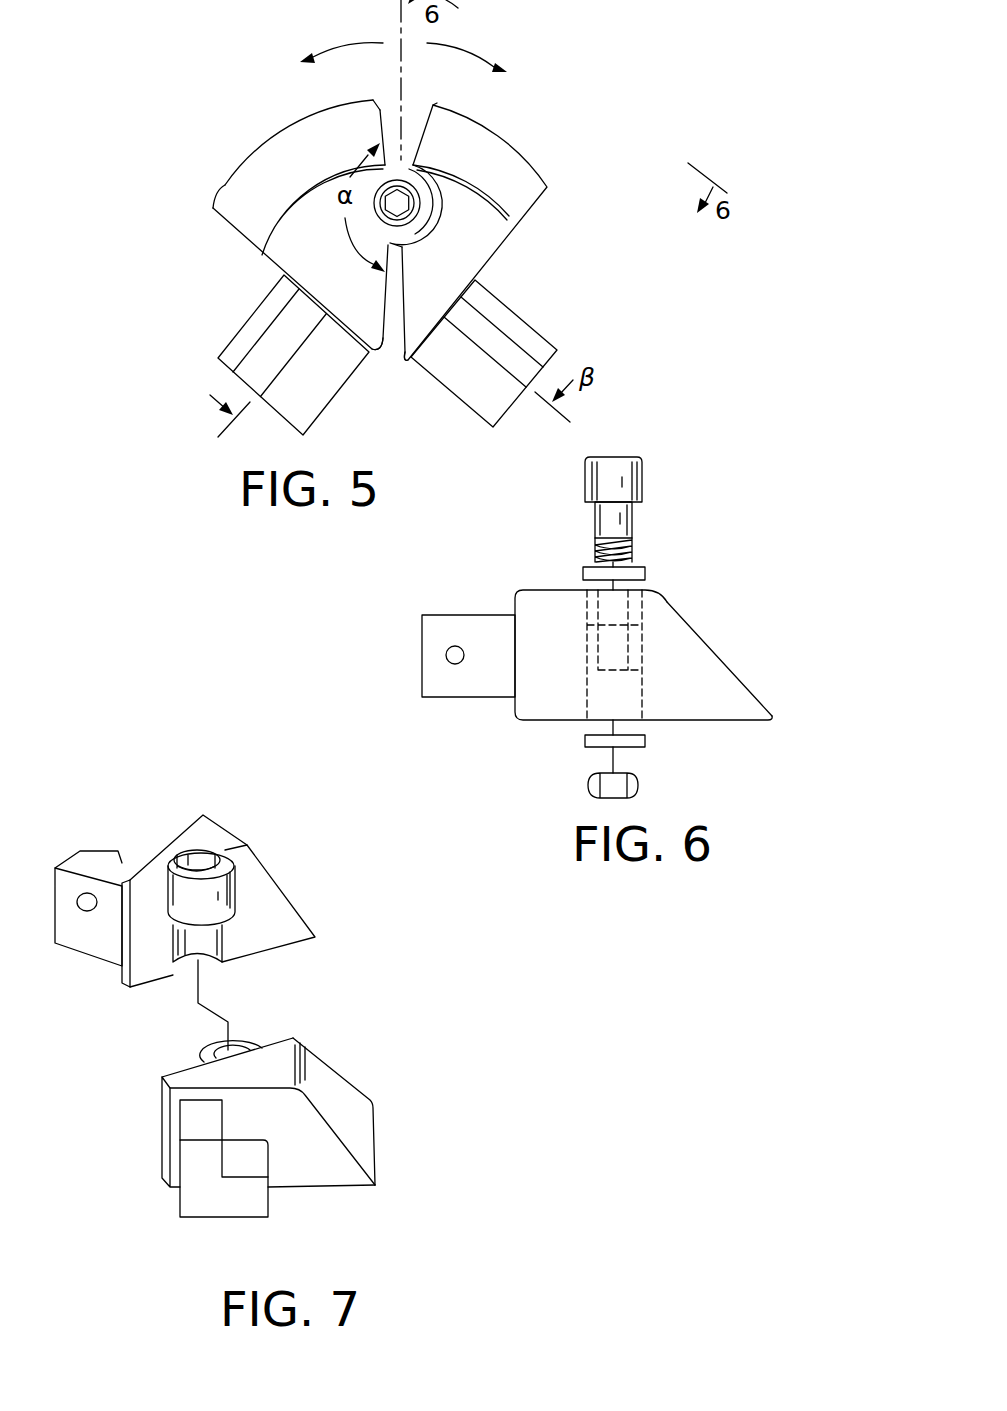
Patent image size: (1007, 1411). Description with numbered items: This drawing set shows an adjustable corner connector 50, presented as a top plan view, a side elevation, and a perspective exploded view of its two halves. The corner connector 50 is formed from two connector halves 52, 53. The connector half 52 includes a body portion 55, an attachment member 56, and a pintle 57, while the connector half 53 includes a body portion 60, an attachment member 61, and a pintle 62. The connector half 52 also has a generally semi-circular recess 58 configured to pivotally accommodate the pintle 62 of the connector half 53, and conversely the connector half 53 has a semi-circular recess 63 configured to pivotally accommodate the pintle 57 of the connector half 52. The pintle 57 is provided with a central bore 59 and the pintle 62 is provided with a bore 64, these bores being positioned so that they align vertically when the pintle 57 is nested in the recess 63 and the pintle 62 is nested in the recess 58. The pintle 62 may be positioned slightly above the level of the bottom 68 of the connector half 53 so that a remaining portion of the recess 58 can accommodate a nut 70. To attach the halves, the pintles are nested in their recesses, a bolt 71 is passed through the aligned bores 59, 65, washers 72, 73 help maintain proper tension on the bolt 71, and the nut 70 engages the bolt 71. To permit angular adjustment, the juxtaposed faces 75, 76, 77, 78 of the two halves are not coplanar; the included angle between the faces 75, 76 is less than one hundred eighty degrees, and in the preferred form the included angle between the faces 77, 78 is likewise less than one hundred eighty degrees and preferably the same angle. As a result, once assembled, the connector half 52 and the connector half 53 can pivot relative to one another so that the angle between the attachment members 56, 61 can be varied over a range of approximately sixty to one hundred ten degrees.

In FIG. 7, the corner connector 50 is at (318, 850).
In FIG. 5, the connector half 52 is at (255, 146).
In FIG. 7, the connector half 52 is at (176, 820).
In FIG. 5, the connector half 53 is at (488, 119).
In FIG. 6, the connector half 53 is at (745, 650).
In FIG. 7, the connector half 53 is at (275, 1152).
In FIG. 5, the body portion 55 is at (252, 208).
In FIG. 7, the body portion 55 is at (225, 835).
In FIG. 5, the attachment member 56 is at (266, 343).
In FIG. 6, the attachment member 56 is at (460, 678).
In FIG. 7, the attachment member 56 is at (90, 867).
In FIG. 5, the pintle 57 is at (406, 222).
In FIG. 7, the pintle 57 is at (205, 900).
In FIG. 7, the semi-circular recess 58 is at (190, 948).
In FIG. 6, the central bore 59 is at (643, 611).
In FIG. 7, the central bore 59 is at (209, 831).
In FIG. 5, the body portion 60 is at (510, 200).
In FIG. 7, the body portion 60 is at (282, 1063).
In FIG. 5, the attachment member 61 is at (530, 337).
In FIG. 7, the attachment member 61 is at (227, 1198).
In FIG. 7, the pintle 62 is at (208, 1052).
In FIG. 5, the semi-circular recess 63 is at (437, 222).
In FIG. 7, the bore 64 is at (247, 1042).
In FIG. 6, the bore 65 is at (643, 657).
In FIG. 7, the bottom 68 is at (292, 1208).
In FIG. 6, the nut 70 is at (640, 785).
In FIG. 6, the bolt 71 is at (643, 480).
In FIG. 6, the washer 72 is at (583, 573).
In FIG. 6, the washer 73 is at (583, 742).
In FIG. 5, the juxtaposed face 75 is at (381, 350).
In FIG. 5, the juxtaposed face 76 is at (379, 108).
In FIG. 5, the juxtaposed face 77 is at (401, 364).
In FIG. 5, the juxtaposed face 78 is at (420, 113).